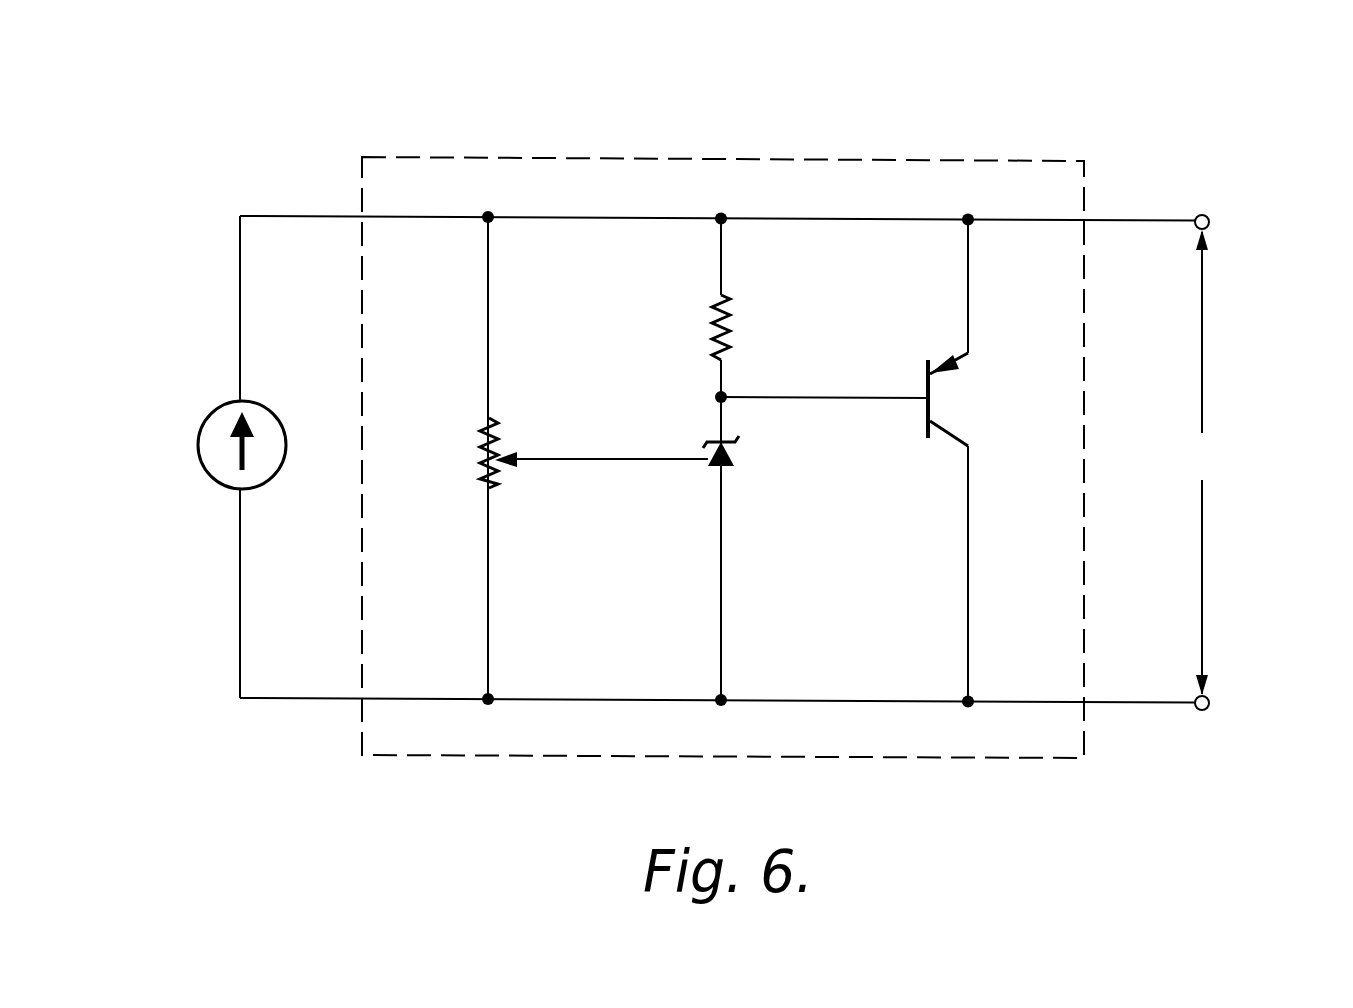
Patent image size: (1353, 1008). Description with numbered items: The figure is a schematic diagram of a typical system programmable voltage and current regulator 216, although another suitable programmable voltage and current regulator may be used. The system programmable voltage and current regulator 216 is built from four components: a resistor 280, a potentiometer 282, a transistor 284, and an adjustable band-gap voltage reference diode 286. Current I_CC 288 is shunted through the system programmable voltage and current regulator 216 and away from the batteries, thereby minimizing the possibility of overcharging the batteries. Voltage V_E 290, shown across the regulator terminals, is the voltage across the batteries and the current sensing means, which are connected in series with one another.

The system programmable voltage and current regulator 216 is at (310, 150).
The resistor R11 280 is at (484, 421).
The potentiometer R21 282 is at (724, 298).
The transistor Q11 284 is at (975, 378).
The adjustable band-gap voltage reference diode U11 286 is at (728, 467).
The current I_CC 288 is at (229, 402).
The voltage V_E 290 is at (1222, 441).